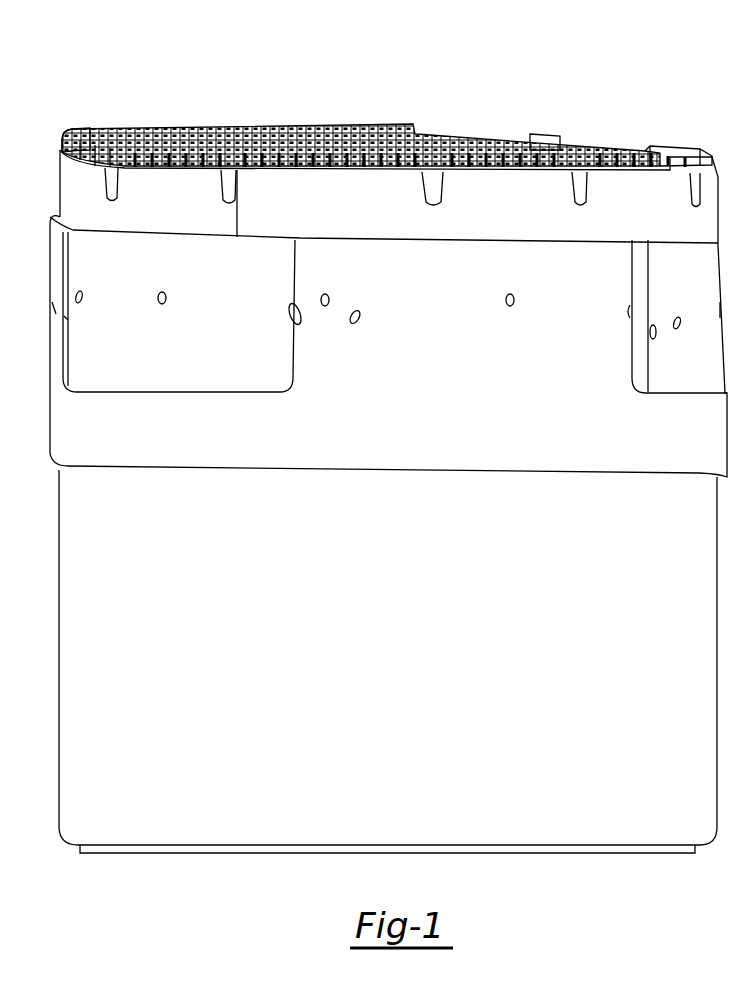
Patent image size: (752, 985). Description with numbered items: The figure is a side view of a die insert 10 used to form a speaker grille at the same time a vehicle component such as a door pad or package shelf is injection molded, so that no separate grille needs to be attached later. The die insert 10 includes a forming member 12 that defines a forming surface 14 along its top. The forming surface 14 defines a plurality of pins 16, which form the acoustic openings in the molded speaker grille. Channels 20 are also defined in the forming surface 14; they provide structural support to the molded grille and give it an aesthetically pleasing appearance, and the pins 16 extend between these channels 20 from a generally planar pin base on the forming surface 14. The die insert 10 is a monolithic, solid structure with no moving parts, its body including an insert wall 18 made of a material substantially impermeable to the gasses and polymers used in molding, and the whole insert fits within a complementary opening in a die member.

The die insert 10 is at (618, 44).
The forming member 12 is at (348, 214).
The forming surface 14 is at (142, 110).
The pins 16 is at (82, 132).
The insert wall 18 is at (398, 623).
The channels 20 is at (225, 188).